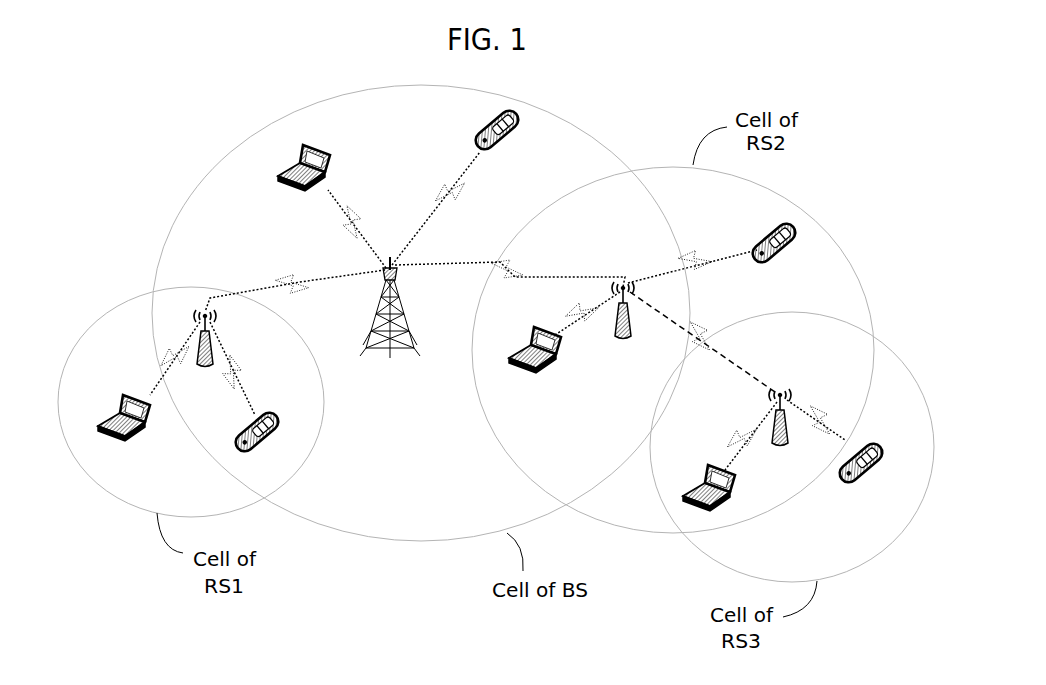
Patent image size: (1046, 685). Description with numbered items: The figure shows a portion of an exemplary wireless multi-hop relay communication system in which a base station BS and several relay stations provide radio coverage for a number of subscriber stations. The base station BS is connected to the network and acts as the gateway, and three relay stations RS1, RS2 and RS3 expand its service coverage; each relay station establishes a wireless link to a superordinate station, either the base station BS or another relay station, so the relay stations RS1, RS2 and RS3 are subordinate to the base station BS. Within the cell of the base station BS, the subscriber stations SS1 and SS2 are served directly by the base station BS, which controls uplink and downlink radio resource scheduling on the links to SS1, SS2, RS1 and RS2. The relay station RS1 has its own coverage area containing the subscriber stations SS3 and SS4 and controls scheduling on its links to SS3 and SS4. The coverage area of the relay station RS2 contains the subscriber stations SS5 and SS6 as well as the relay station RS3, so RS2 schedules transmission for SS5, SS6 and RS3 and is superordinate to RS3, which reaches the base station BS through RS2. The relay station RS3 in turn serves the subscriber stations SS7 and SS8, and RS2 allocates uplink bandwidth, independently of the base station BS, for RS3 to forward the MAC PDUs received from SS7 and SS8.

The base station BS is at (390, 327).
The relay station RS1 is at (204, 356).
The relay station RS2 is at (624, 328).
The relay station RS3 is at (779, 435).
The subscriber station SS1 is at (497, 144).
The subscriber station SS2 is at (304, 178).
The subscriber station SS3 is at (257, 446).
The subscriber station SS4 is at (124, 431).
The subscriber station SS5 is at (774, 258).
The subscriber station SS6 is at (535, 362).
The subscriber station SS7 is at (861, 478).
The subscriber station SS8 is at (709, 498).